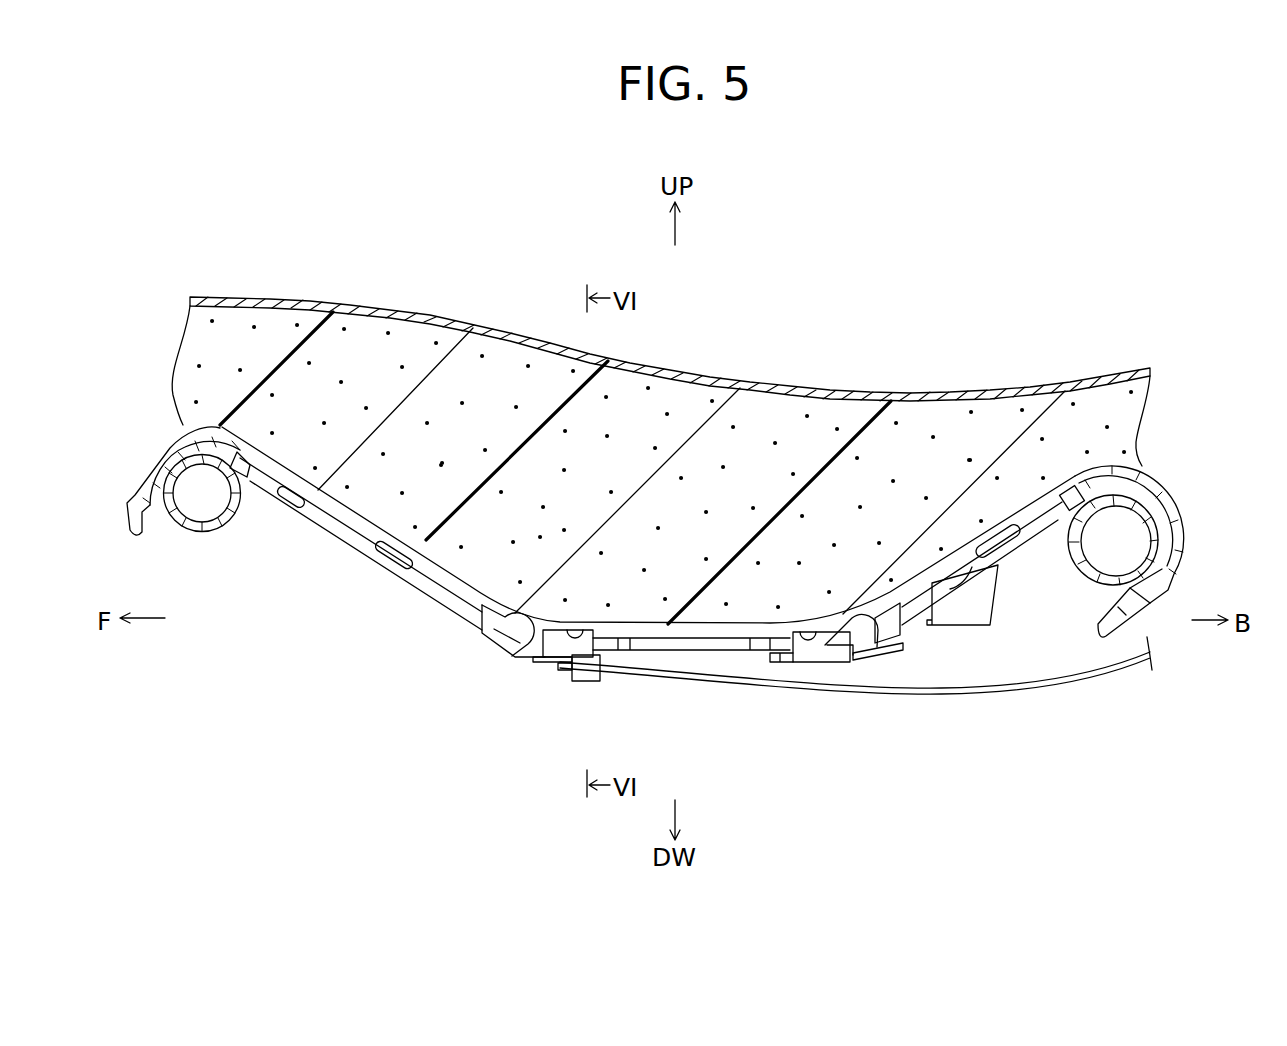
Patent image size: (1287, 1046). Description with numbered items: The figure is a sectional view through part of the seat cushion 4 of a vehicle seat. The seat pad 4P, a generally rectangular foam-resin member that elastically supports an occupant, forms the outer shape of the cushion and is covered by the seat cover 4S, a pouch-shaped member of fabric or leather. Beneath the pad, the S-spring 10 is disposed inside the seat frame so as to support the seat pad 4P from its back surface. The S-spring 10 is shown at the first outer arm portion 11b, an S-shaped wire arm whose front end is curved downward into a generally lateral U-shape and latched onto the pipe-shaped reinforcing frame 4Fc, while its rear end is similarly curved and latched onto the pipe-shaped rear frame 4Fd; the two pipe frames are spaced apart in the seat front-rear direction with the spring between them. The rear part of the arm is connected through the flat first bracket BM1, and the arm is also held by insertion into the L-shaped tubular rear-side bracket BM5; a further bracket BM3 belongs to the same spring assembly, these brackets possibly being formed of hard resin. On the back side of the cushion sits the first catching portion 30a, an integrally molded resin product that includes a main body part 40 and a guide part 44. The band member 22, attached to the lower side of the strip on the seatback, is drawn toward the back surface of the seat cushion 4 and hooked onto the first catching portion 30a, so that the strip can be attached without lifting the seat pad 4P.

The seat cushion 4 is at (995, 320).
The seat cover 4S is at (840, 392).
The seat pad 4P is at (758, 423).
The S-spring 10 is at (337, 547).
The first outer arm portion 11b is at (413, 586).
The reinforcing frame 4Fc is at (207, 532).
The rear frame 4Fd is at (1152, 510).
The first bracket BM1 is at (977, 602).
The main body part 40 is at (542, 660).
The bracket BM3 is at (493, 645).
The first catching portion 30a is at (563, 687).
The guide part 44 is at (588, 675).
The rear-side bracket BM5 is at (870, 656).
The band member 22 is at (1038, 682).